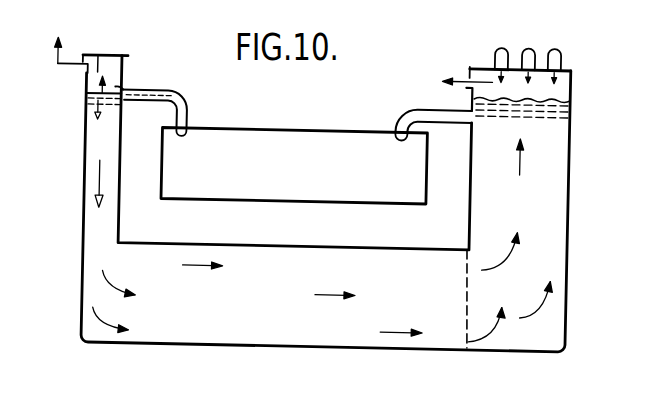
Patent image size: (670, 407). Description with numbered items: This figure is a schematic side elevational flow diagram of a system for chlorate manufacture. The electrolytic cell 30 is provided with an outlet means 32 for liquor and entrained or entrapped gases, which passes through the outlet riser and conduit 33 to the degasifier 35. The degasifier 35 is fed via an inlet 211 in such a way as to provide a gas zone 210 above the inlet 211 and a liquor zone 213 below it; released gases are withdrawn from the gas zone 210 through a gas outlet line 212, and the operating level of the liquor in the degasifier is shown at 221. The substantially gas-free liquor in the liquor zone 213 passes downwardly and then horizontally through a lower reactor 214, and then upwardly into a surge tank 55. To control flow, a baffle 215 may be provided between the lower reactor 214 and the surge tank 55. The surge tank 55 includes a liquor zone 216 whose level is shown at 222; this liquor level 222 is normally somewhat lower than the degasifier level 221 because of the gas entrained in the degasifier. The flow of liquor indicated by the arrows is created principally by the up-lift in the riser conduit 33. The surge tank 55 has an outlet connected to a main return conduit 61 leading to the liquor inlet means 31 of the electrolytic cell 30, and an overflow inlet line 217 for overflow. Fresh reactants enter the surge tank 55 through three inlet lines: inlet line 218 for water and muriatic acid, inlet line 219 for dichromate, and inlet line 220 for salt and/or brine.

The electrolytic cell 30 is at (272, 129).
The liquor inlet means 31 is at (396, 130).
The outlet means 32 is at (190, 128).
The outlet riser and conduit 33 is at (186, 92).
The degasifier 35 is at (83, 123).
The surge tank 55 is at (570, 147).
The main return conduit 61 is at (427, 110).
The gas zone 210 is at (117, 66).
The inlet 211 is at (118, 88).
The gas outlet line 212 is at (77, 72).
The liquor zone 213 is at (95, 138).
The lower reactor 214 is at (147, 330).
The baffle 215 is at (465, 332).
The liquor zone 216 is at (553, 238).
The overflow inlet line 217 is at (465, 73).
The inlet line 218 is at (495, 50).
The inlet line 219 is at (534, 48).
The inlet line 220 is at (563, 54).
The liquor level 221 is at (98, 55).
The liquor level 222 is at (567, 99).